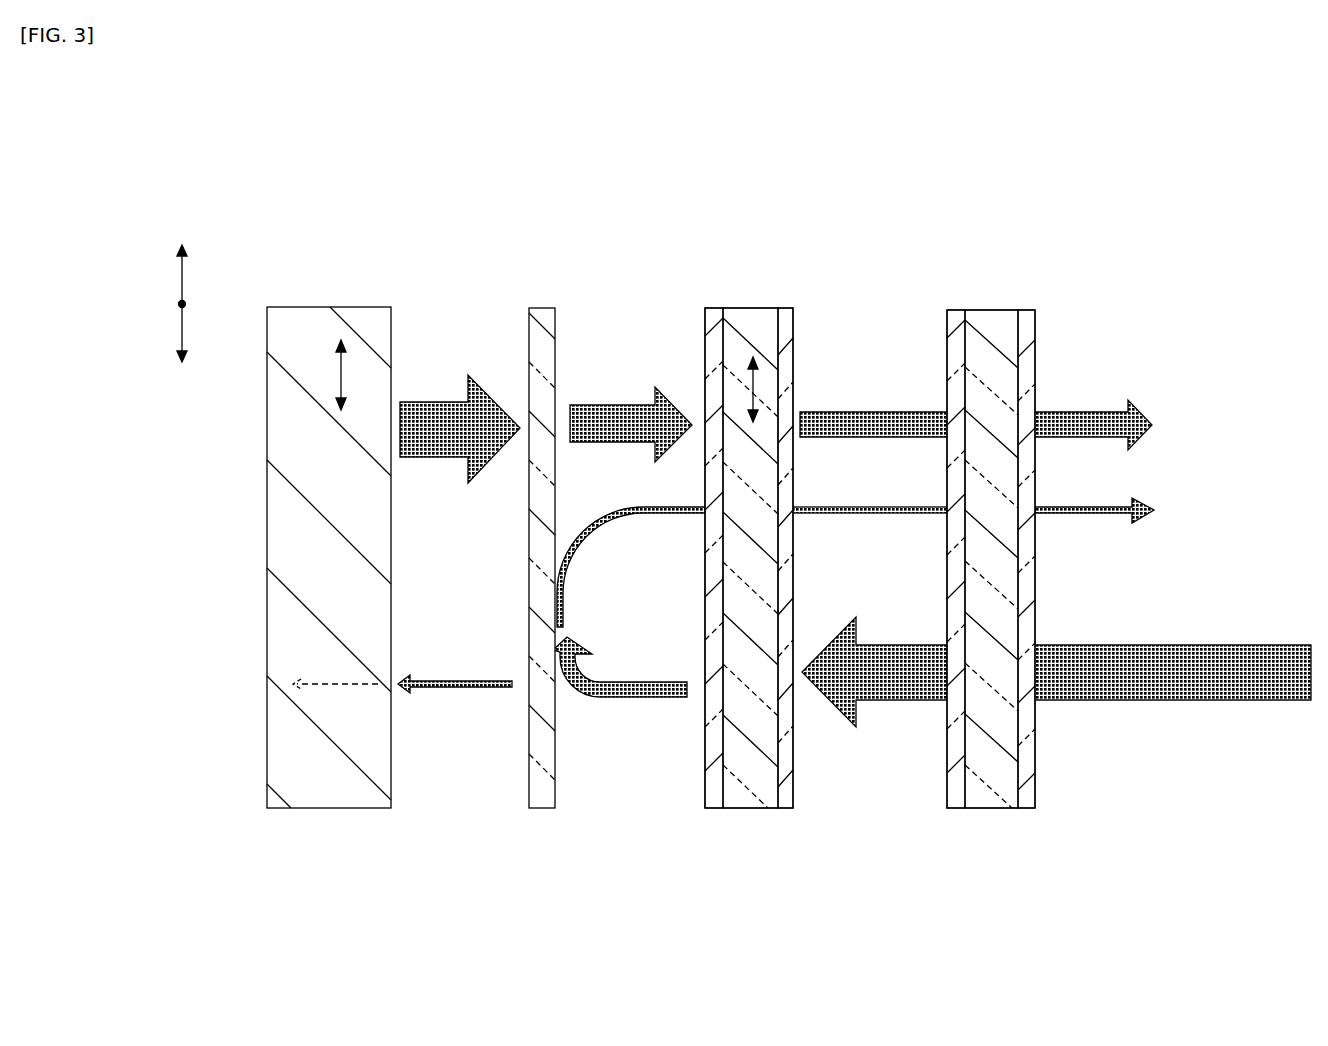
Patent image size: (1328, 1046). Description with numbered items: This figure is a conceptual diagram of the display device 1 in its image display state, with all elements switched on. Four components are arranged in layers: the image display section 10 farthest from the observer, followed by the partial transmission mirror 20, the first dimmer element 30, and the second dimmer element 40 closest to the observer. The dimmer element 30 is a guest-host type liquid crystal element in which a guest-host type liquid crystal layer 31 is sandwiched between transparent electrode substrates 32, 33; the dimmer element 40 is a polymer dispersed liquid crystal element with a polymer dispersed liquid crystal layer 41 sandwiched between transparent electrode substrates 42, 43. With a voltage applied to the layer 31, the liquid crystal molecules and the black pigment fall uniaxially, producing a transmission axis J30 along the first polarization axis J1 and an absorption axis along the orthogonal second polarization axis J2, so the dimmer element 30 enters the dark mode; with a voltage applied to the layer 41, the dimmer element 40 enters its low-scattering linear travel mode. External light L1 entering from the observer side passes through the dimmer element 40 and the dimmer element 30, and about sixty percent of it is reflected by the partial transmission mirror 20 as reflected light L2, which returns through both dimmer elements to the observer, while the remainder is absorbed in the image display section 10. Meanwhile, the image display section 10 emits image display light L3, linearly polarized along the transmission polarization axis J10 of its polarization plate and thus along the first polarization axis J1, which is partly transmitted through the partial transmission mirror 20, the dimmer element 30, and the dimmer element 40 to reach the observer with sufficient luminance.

The display device 1 is at (738, 536).
The image display section 10 is at (355, 507).
The partial transmission mirror 20 is at (540, 318).
The first dimmer element 30 is at (776, 495).
The guest-host type liquid crystal layer 31 is at (796, 525).
The transparent electrode substrate 32 is at (710, 313).
The transparent electrode substrate 33 is at (783, 519).
The second dimmer element 40 is at (984, 492).
The polymer dispersed liquid crystal layer 41 is at (995, 322).
The transparent electrode substrate 42 is at (957, 320).
The transparent electrode substrate 43 is at (1030, 320).
The first polarization axis J1 is at (178, 285).
The second polarization axis J2 is at (201, 305).
The transmission polarization axis J10 is at (344, 368).
The transmission axis J30 is at (757, 388).
The external light L1 is at (443, 688).
The reflected light L2 is at (633, 515).
The image display light L3 is at (428, 435).